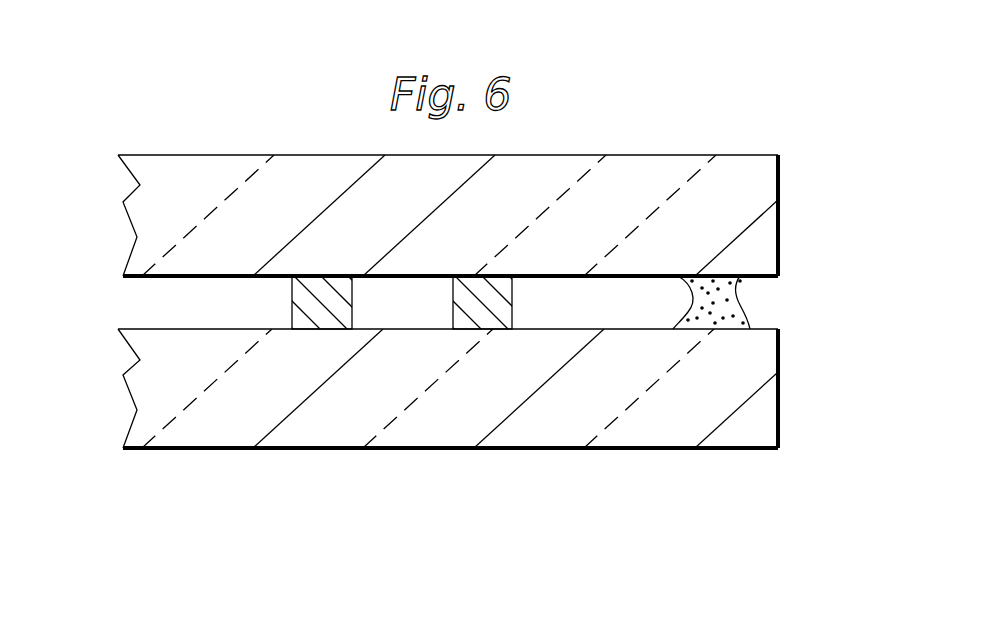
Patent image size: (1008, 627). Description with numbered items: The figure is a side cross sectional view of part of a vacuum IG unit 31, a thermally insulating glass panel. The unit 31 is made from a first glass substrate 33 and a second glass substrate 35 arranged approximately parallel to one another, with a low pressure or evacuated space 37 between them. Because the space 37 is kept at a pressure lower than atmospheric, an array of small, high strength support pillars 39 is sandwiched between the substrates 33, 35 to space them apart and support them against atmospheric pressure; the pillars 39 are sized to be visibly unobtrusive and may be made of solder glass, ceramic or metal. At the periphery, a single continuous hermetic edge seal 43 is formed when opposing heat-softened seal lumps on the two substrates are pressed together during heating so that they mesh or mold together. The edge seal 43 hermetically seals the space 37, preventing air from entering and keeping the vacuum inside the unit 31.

The vacuum IG unit 31 is at (729, 96).
The first glass substrate 33 is at (243, 413).
The second glass substrate 35 is at (302, 180).
The low pressure space 37 is at (563, 293).
The support pillars 39 is at (292, 308).
The edge seal 43 is at (760, 293).